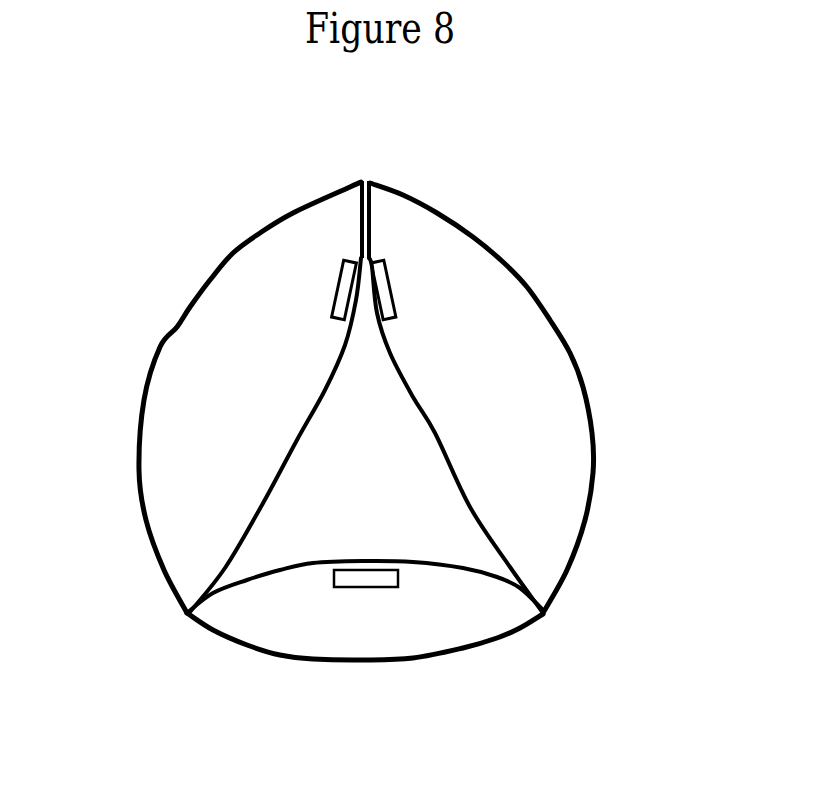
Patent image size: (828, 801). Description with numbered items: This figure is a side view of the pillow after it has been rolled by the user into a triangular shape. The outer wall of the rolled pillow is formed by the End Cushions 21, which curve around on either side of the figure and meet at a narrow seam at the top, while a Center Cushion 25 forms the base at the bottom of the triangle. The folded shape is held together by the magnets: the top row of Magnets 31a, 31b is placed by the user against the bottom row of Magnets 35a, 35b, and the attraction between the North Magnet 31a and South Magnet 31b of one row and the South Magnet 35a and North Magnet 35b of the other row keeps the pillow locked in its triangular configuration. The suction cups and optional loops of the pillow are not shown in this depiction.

The End Cushion 21 is at (190, 347).
The Center Cushion 25 is at (368, 642).
The North Magnet 31a is at (249, 216).
The South Magnet 31b is at (344, 289).
The South Magnet 35a is at (491, 202).
The North Magnet 35b is at (383, 289).